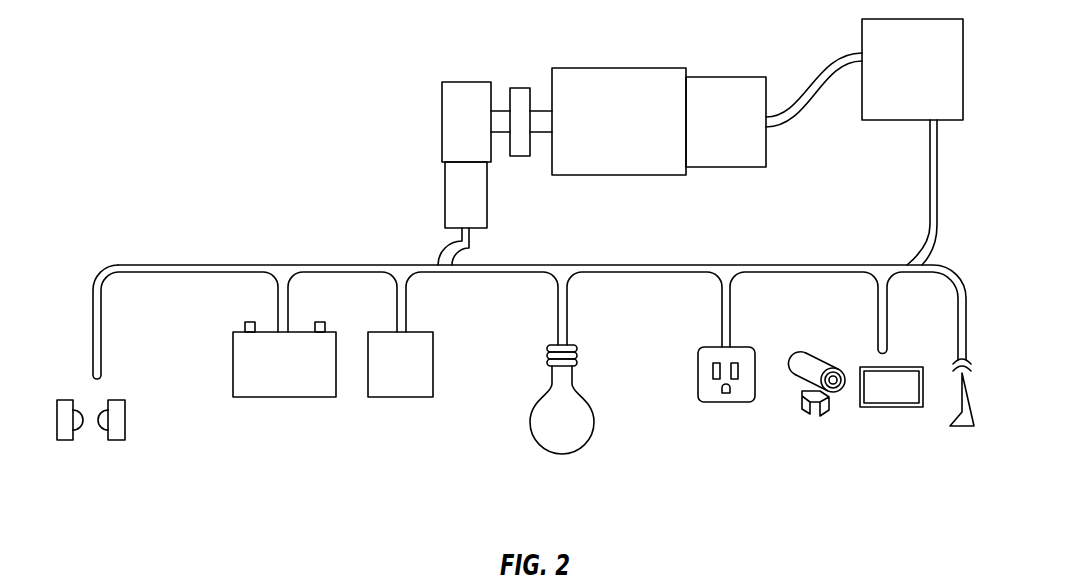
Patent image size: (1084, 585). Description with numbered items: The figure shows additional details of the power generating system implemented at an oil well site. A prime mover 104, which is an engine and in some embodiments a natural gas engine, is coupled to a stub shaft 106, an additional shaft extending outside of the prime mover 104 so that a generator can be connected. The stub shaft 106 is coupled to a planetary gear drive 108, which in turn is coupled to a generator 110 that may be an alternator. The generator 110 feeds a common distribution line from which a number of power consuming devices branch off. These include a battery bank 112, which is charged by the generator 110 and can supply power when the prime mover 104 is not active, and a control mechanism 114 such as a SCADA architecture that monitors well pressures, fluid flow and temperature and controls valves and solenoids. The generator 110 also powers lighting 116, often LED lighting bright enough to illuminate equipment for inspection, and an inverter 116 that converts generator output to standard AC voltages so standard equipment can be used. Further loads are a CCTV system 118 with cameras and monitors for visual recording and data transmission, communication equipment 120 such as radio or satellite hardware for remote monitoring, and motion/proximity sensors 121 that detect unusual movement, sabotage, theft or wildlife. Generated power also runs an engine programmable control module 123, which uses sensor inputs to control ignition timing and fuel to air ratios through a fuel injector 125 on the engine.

The prime mover 104 is at (628, 175).
The fuel injector 125 is at (737, 136).
The stub shaft 106 is at (500, 110).
The planetary gear drive 108 is at (470, 82).
The generator 110 is at (487, 215).
The engine programmable control module 123 is at (926, 81).
The battery bank 112 is at (295, 397).
The control mechanism 114 is at (400, 397).
The lighting 116 is at (560, 452).
The CCTV system 118 is at (865, 407).
The communication equipment 120 is at (959, 427).
The motion/proximity sensors 121 is at (125, 428).